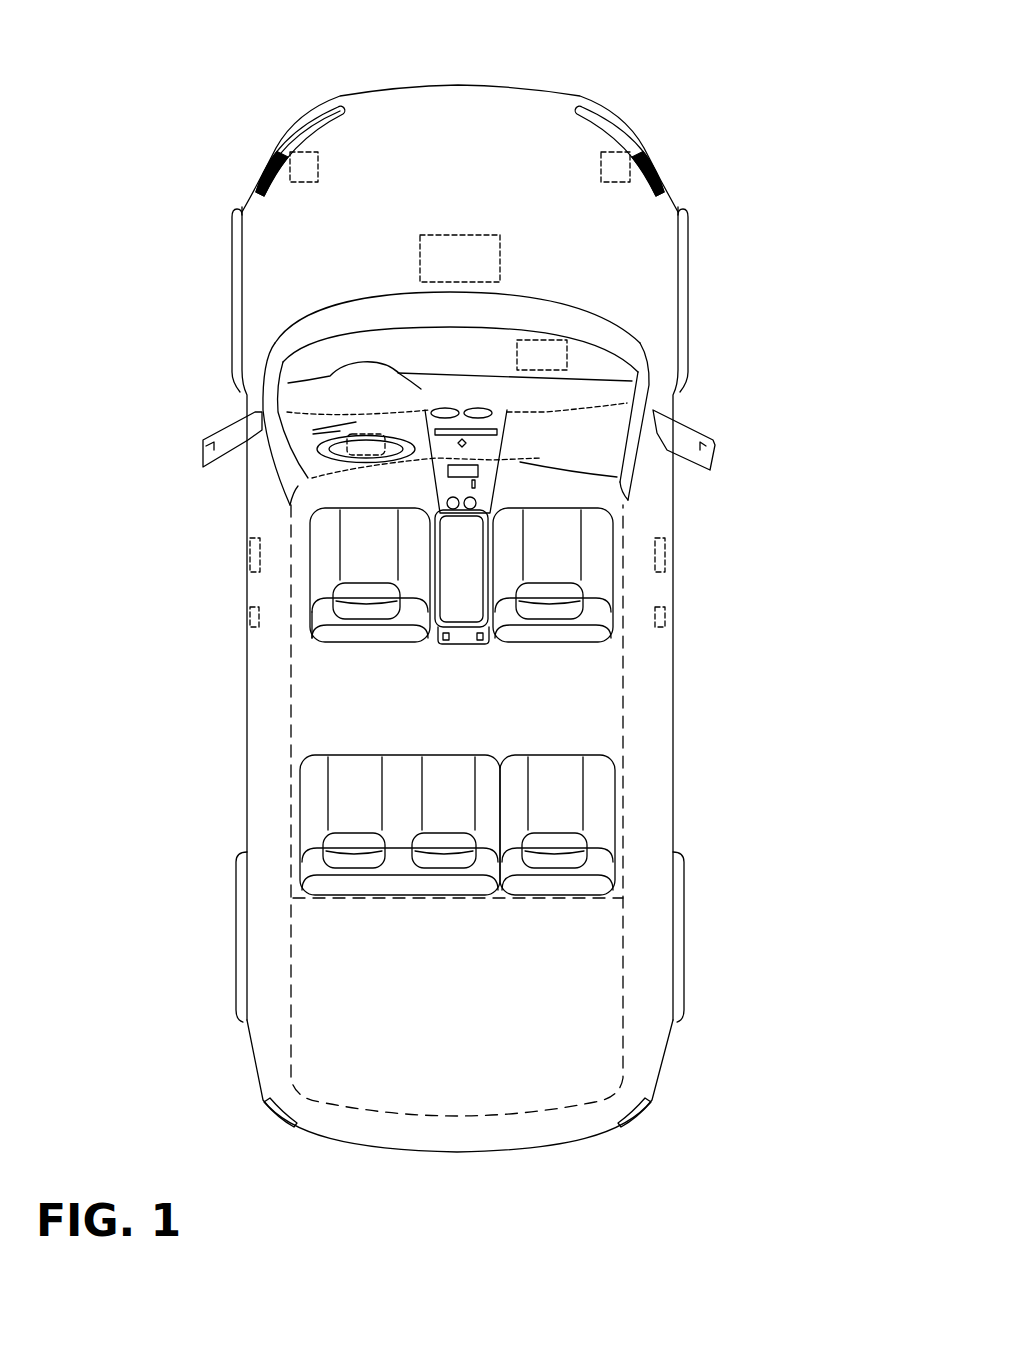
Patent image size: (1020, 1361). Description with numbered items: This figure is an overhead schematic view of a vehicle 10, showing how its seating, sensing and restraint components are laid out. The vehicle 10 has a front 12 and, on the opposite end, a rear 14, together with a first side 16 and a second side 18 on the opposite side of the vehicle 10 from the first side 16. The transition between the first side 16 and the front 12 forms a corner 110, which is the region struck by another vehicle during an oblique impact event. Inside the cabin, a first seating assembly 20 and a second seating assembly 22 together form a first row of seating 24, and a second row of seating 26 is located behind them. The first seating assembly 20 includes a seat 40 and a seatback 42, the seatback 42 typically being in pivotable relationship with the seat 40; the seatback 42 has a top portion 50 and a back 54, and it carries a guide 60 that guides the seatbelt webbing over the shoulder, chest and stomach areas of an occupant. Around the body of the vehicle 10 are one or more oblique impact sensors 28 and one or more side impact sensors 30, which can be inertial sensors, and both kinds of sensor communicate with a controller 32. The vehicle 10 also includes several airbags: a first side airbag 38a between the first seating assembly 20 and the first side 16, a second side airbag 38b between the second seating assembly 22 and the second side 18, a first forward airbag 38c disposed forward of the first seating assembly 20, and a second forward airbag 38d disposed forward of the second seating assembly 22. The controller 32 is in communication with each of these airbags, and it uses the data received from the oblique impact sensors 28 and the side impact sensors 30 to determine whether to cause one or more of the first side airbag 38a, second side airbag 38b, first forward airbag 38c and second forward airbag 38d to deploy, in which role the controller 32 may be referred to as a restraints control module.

The vehicle 10 is at (478, 629).
The front 12 is at (453, 82).
The rear 14 is at (423, 1158).
The first side 16 is at (272, 632).
The second side 18 is at (673, 648).
The first seating assembly 20 is at (250, 679).
The second seating assembly 22 is at (615, 641).
The first row of seating 24 is at (317, 613).
The second row of seating 26 is at (303, 817).
The oblique impact sensors 28 is at (306, 168).
The side impact sensors 30 is at (248, 548).
The controller 32 is at (455, 250).
The first side airbag 38a is at (250, 617).
The second side airbag 38b is at (666, 613).
The first forward airbag 38c is at (345, 424).
The second forward airbag 38d is at (552, 342).
The seat 40 is at (350, 553).
The seatback 42 is at (397, 648).
The top portion 50 is at (437, 616).
The back 54 is at (386, 652).
The guide 60 is at (195, 670).
The corner 110 is at (297, 116).